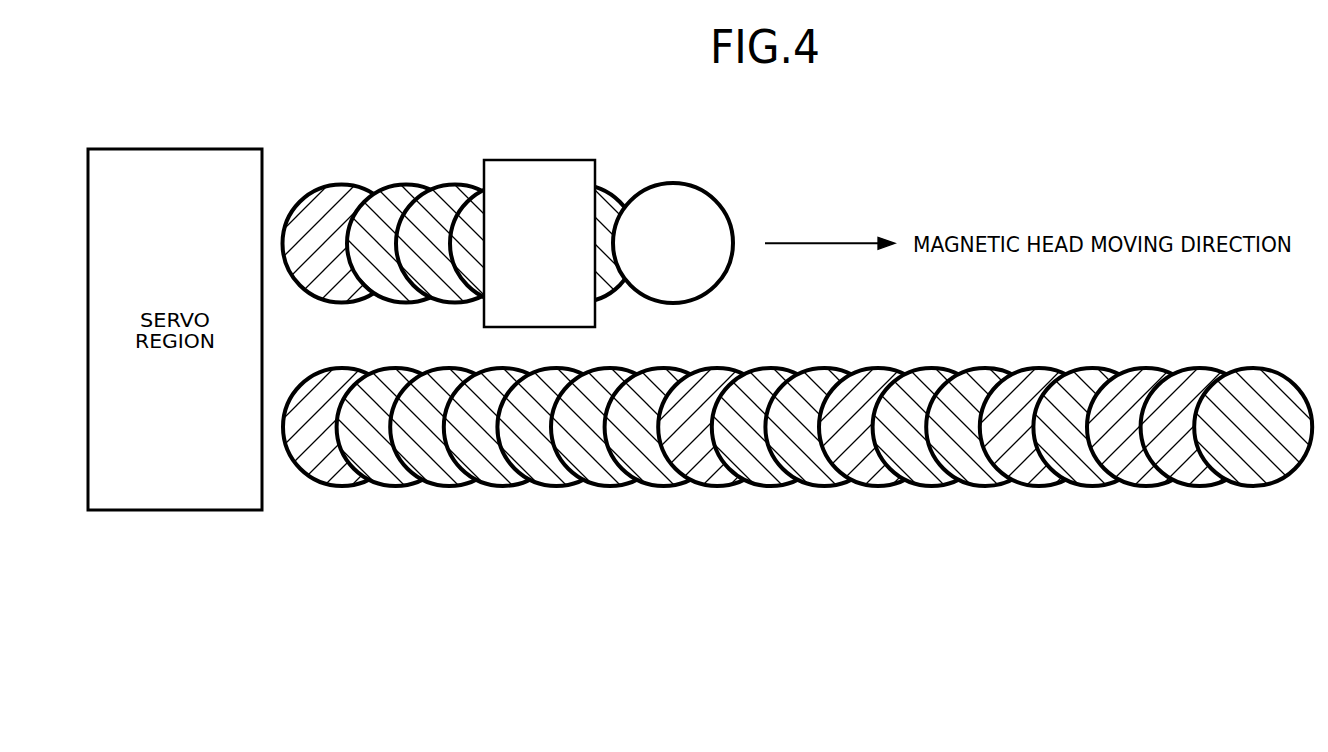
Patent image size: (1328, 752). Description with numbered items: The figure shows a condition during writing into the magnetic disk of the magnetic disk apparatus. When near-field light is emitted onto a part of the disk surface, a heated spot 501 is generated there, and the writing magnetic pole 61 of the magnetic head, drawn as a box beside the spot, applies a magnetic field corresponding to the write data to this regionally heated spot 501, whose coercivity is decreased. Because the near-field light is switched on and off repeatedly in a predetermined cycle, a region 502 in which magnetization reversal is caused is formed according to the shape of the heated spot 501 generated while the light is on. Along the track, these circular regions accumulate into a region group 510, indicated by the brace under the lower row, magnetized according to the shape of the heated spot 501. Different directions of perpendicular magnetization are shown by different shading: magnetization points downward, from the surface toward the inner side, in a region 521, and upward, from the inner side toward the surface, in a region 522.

The writing magnetic pole 61 is at (546, 158).
The heated spot 501 is at (672, 183).
The region 502 is at (455, 185).
The region group 510 is at (797, 489).
The region 521 is at (713, 487).
The region 522 is at (771, 451).